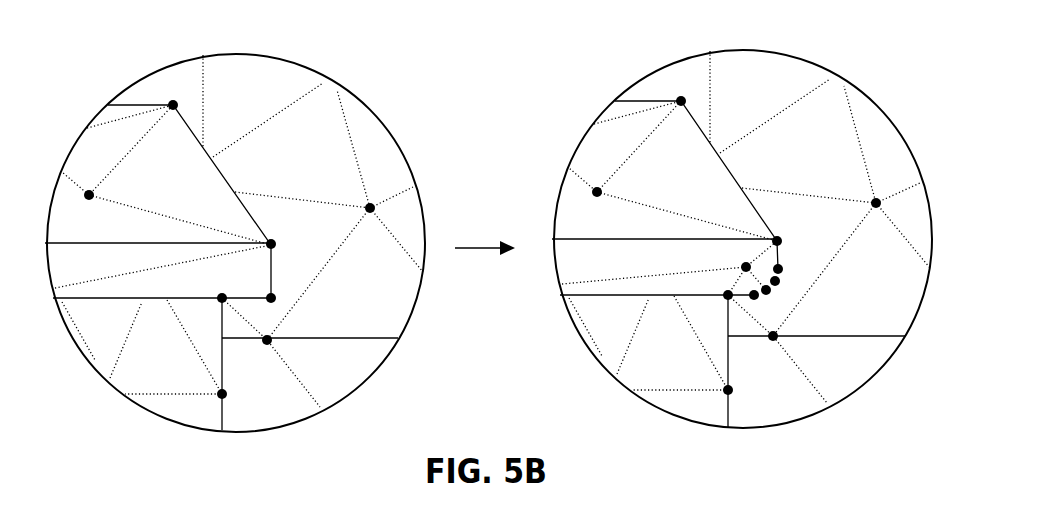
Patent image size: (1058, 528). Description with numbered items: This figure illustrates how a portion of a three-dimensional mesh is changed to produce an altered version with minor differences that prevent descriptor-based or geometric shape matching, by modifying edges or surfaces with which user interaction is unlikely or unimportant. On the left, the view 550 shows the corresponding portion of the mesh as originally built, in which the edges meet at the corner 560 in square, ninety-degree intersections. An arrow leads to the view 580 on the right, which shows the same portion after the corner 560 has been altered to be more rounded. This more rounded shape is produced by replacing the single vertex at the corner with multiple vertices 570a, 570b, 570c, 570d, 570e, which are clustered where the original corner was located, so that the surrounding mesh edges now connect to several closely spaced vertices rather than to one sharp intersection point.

The view 550 is at (106, 48).
The corner 560 is at (271, 298).
The view 580 is at (563, 67).
The vertex 570a is at (754, 295).
The vertex 570b is at (766, 290).
The vertex 570c is at (775, 281).
The vertex 570d is at (778, 269).
The vertex 570e is at (746, 265).